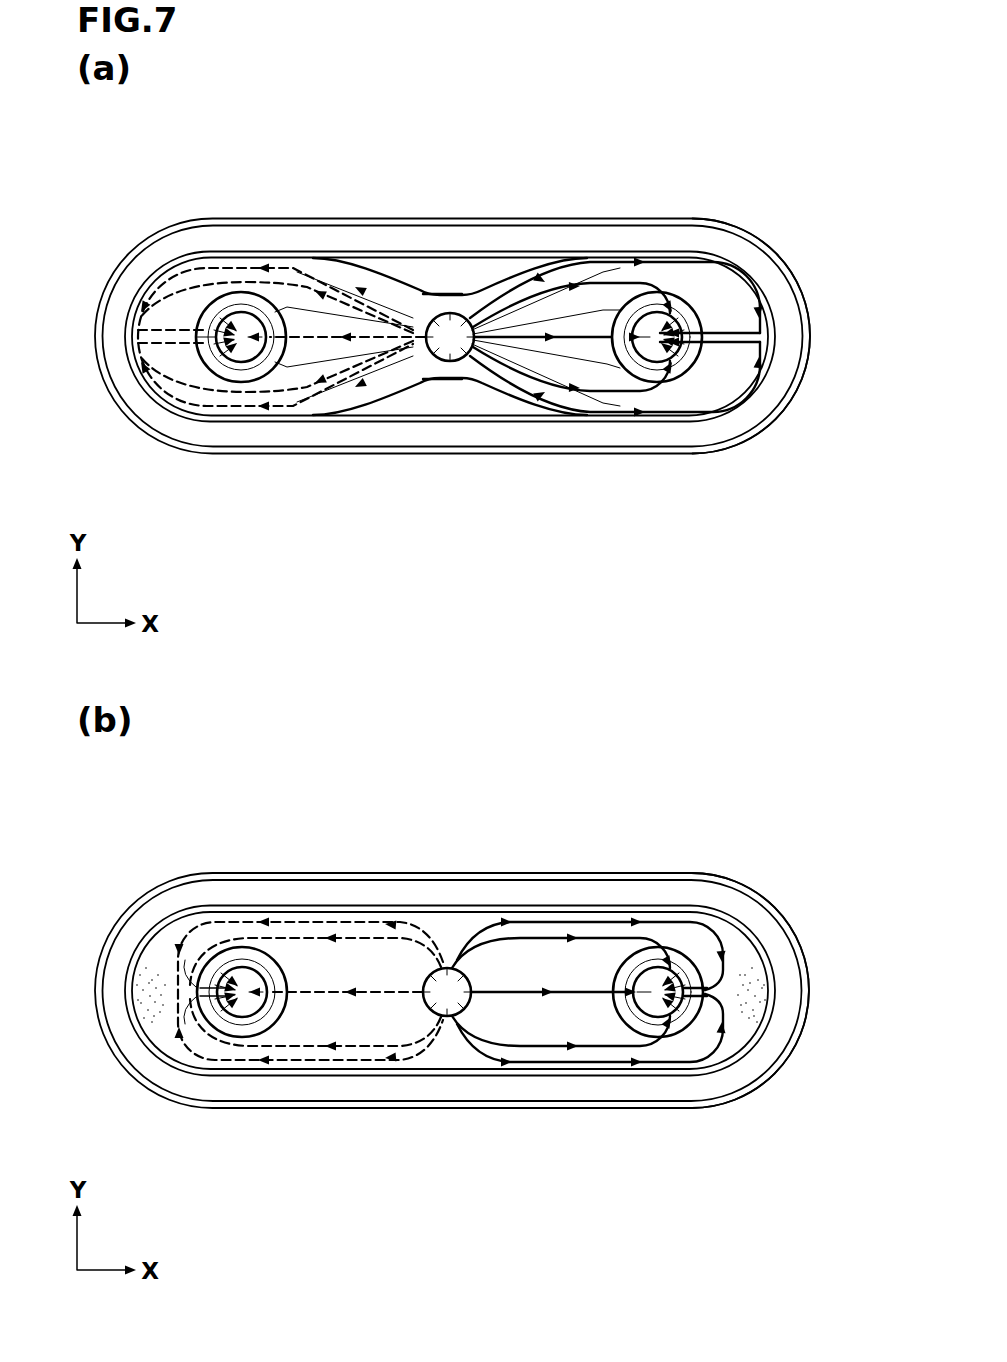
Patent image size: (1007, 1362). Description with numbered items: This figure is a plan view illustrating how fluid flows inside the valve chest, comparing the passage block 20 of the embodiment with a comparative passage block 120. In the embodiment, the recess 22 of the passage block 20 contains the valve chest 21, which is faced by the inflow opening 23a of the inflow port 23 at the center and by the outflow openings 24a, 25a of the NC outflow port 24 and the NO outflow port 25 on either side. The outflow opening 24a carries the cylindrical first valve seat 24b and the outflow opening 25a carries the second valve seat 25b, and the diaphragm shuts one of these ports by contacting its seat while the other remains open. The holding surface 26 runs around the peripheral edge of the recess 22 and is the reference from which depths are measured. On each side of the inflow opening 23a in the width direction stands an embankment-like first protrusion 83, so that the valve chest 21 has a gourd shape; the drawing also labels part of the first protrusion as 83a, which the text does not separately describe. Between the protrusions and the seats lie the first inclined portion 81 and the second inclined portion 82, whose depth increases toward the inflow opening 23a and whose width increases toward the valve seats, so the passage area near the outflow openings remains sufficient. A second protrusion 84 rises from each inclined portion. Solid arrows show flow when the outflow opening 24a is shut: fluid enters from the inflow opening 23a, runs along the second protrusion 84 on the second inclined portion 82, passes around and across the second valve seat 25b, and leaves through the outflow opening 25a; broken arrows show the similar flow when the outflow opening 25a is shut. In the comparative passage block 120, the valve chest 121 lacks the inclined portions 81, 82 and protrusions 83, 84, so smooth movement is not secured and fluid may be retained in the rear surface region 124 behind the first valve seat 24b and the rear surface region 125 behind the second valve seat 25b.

The passage block 20 is at (775, 104).
The valve chest 21 is at (282, 268).
The recess 22 is at (352, 430).
The inflow port 23 is at (452, 362).
The inflow opening 23a is at (452, 312).
The NC outflow port 24 is at (230, 360).
The outflow opening 24a is at (240, 318).
The first valve seat 24b is at (236, 358).
The NO outflow port 25 is at (658, 359).
The outflow opening 25a is at (658, 317).
The second valve seat 25b is at (637, 300).
The holding surface 26 is at (773, 383).
The first inclined portion 81 is at (333, 298).
The second inclined portion 82 is at (562, 375).
The first protrusion 83 is at (477, 273).
The throttle portion 83a is at (435, 287).
The second protrusion 84 is at (568, 328).
The passage block 120 is at (777, 758).
The valve chest 121 is at (281, 930).
The rear surface region 124 is at (143, 995).
The rear surface region 125 is at (740, 973).